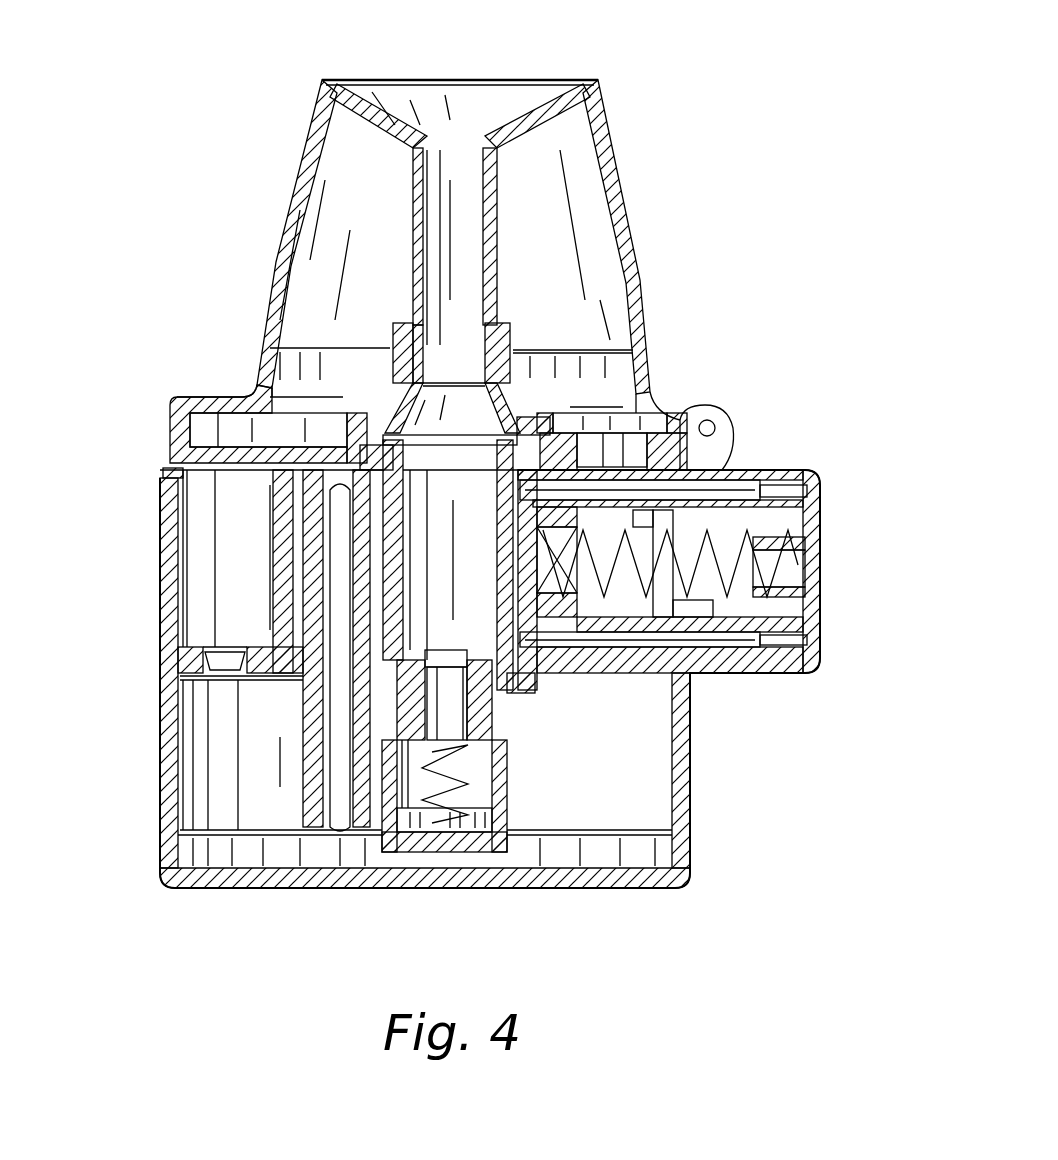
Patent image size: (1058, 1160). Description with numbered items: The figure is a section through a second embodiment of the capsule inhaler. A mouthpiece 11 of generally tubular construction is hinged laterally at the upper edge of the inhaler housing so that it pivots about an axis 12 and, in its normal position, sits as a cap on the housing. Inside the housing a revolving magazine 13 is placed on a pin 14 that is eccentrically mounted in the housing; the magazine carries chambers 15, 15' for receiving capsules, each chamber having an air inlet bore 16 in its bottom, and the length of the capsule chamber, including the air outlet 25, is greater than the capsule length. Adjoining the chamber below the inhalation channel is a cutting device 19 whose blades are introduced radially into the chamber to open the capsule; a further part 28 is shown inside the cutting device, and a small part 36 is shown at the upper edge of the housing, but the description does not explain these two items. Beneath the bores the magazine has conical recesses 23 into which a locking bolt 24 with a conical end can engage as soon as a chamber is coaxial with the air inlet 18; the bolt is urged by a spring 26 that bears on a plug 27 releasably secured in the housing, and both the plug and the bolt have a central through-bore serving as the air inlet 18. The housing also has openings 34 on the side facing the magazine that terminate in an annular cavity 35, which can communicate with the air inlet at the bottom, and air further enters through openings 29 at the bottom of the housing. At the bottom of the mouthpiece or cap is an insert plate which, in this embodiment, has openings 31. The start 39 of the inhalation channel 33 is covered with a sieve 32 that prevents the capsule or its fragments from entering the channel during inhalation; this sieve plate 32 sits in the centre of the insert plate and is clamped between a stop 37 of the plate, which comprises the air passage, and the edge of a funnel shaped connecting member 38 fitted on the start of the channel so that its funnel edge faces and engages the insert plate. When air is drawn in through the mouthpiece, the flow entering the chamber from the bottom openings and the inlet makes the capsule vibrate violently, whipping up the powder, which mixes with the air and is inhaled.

The mouthpiece 11 is at (620, 128).
The axis 12 is at (712, 426).
The revolving magazine 13 is at (163, 513).
The pin 14 is at (337, 797).
The chamber 15 is at (492, 596).
The chamber 15' is at (176, 571).
The air inlet bore 16 is at (212, 660).
The air inlet 18 is at (503, 853).
The cutting device 19 is at (828, 514).
The conical recesses 23 is at (177, 702).
The locking bolt 24 is at (472, 620).
The air outlet 25 is at (428, 462).
The spring 26 is at (400, 807).
The plug 27 is at (403, 840).
The regulator spring 28 is at (728, 585).
The openings 29 is at (633, 872).
The openings 31 is at (180, 403).
The sieve 32 is at (480, 417).
The inhalation channel 33 is at (468, 165).
The openings 34 is at (253, 682).
The annular cavity 35 is at (200, 805).
The lip 36 is at (168, 492).
The stop 37 is at (418, 458).
The funnel shaped connecting member 38 is at (613, 432).
The start of the inhalation channel 39 is at (507, 370).